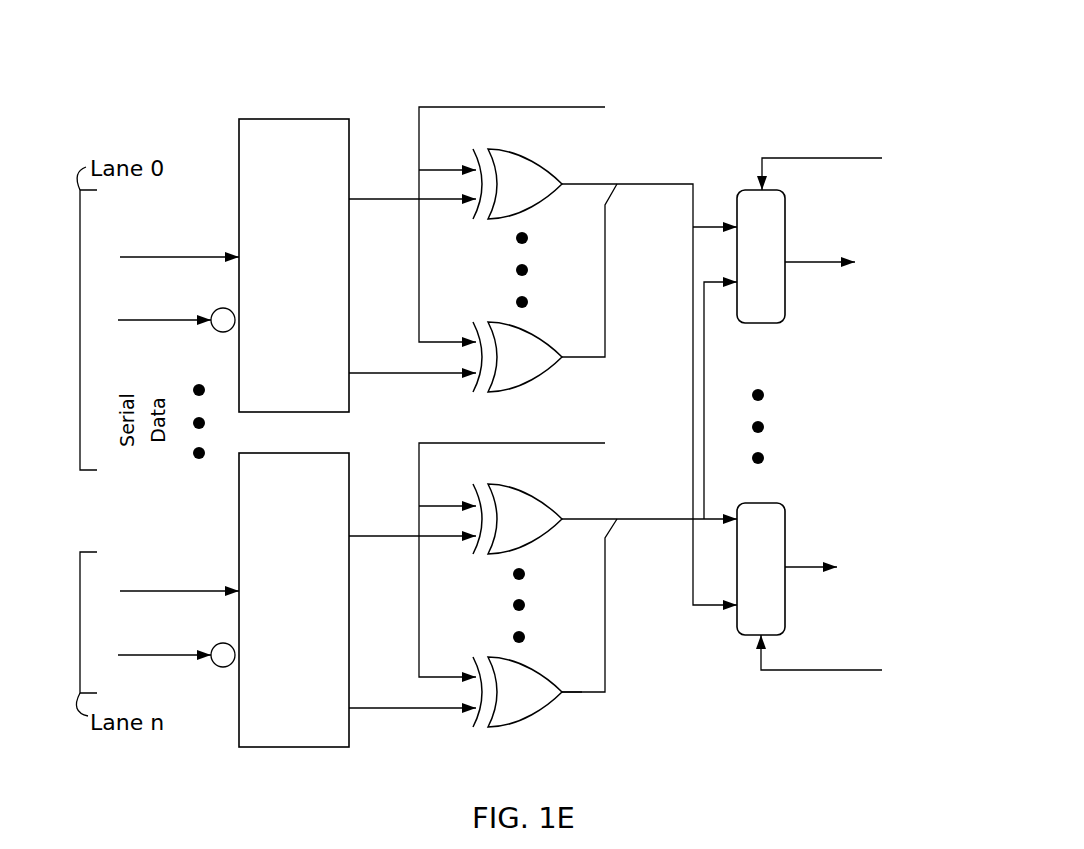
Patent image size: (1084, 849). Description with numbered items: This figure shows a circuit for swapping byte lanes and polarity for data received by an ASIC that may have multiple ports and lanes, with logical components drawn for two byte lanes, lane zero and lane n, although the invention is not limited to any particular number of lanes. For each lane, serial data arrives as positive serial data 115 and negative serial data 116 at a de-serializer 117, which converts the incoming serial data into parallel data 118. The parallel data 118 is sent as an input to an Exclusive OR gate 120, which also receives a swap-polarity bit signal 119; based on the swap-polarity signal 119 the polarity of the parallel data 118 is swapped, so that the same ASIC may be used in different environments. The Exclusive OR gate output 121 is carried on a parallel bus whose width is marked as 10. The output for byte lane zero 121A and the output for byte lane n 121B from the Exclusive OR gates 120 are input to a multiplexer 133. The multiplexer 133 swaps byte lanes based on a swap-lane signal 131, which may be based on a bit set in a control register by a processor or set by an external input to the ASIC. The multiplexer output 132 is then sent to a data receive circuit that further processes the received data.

The 10-bit parallel data bus 10 is at (642, 196).
The positive serial data 115 is at (165, 231).
The negative serial data 116 is at (145, 321).
The de-serializer 117 is at (272, 119).
The parallel data 118 is at (360, 199).
The swap-polarity bit signal 119 is at (545, 107).
The Exclusive OR gate 120 is at (525, 149).
The Exclusive OR gate output 121 is at (582, 692).
The output for byte lane 0 121A is at (605, 232).
The output for byte lane n 121B is at (577, 519).
The swap-lane signal 131 is at (818, 128).
The multiplexer output 132 is at (812, 262).
The multiplexer 133 is at (770, 323).